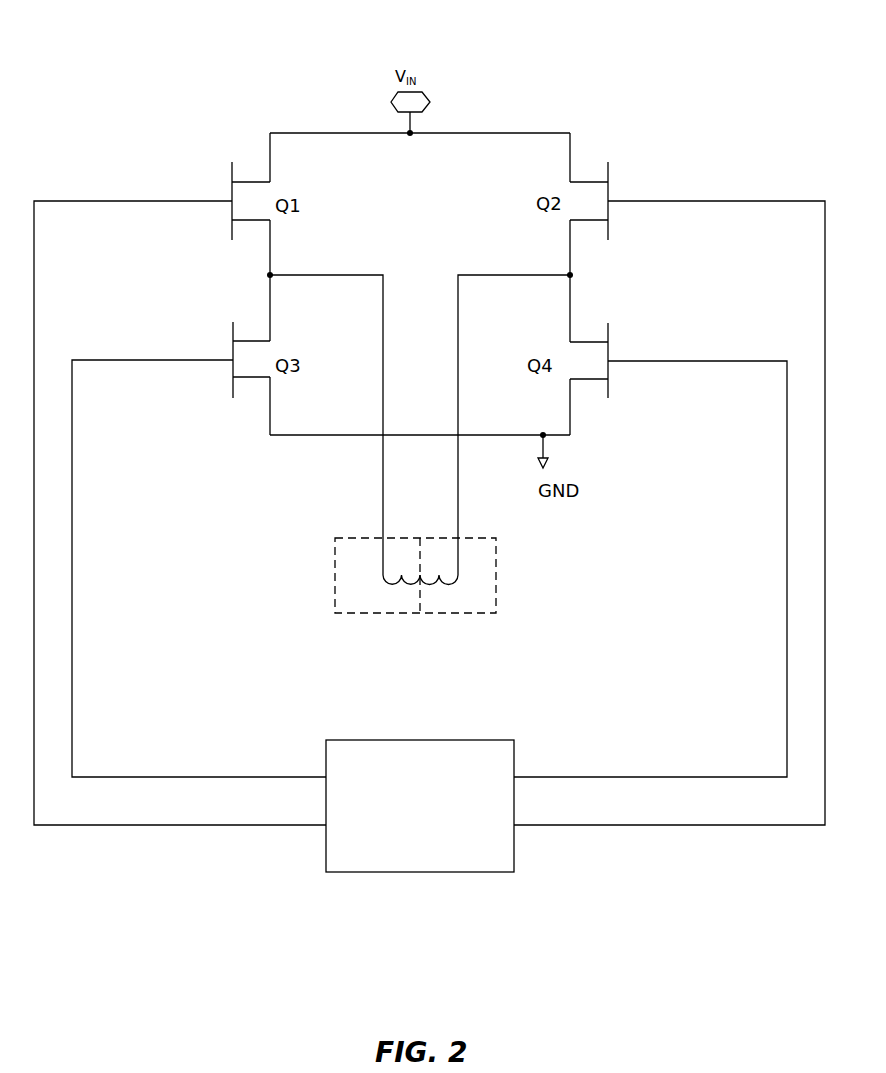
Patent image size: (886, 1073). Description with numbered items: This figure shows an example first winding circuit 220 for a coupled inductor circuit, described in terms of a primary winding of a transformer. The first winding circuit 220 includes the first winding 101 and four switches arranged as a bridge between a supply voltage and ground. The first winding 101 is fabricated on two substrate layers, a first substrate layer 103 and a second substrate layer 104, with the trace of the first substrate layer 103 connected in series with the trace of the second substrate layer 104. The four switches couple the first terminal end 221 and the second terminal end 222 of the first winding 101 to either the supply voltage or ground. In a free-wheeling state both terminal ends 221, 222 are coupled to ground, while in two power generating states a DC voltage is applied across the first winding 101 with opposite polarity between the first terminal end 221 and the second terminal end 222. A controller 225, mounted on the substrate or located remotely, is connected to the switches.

The first winding circuit 220 is at (684, 73).
The first terminal end 221 is at (268, 277).
The second terminal end 222 is at (572, 277).
The first winding 101 is at (335, 600).
The first substrate layer 103 is at (395, 615).
The second substrate layer 104 is at (440, 615).
The controller 225 is at (418, 873).